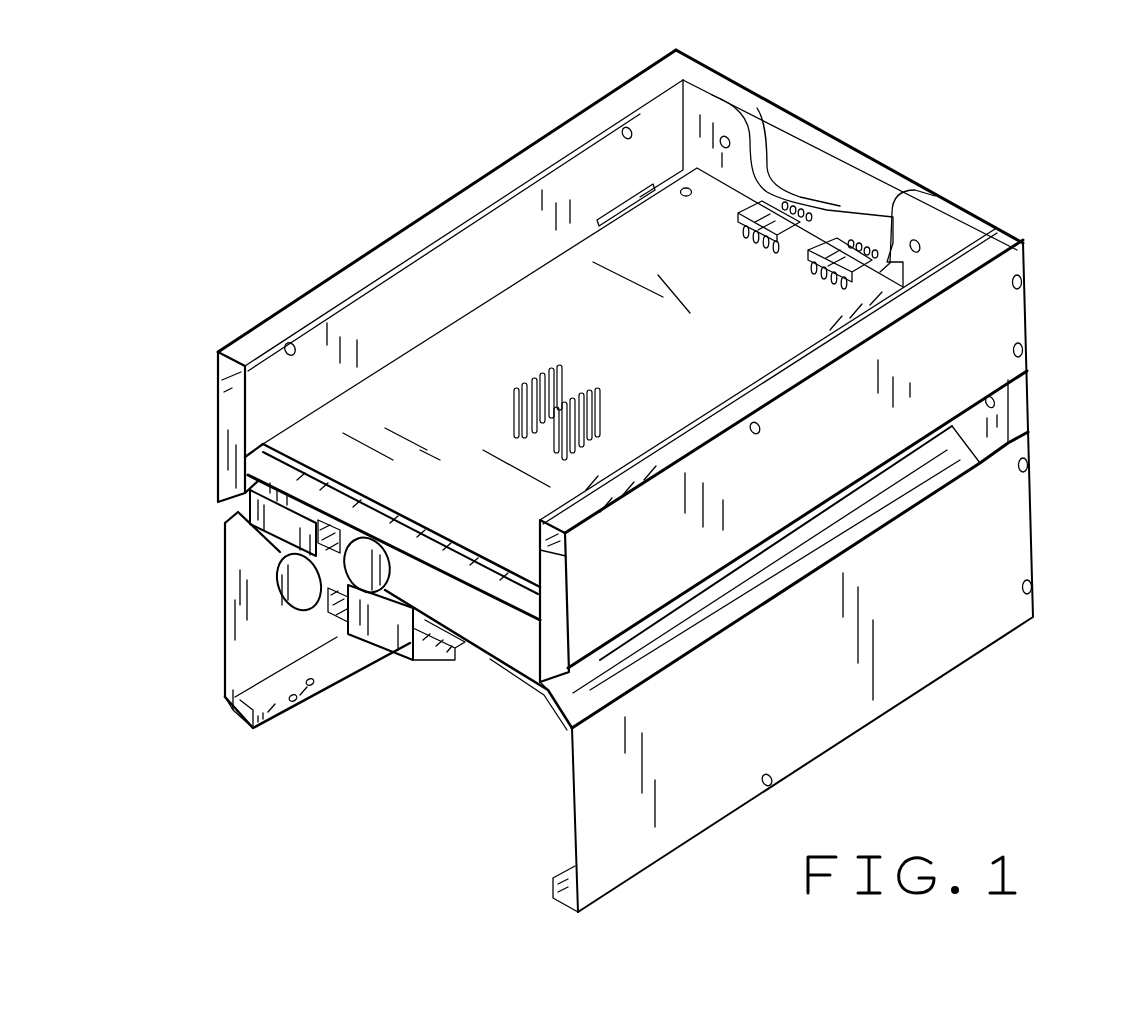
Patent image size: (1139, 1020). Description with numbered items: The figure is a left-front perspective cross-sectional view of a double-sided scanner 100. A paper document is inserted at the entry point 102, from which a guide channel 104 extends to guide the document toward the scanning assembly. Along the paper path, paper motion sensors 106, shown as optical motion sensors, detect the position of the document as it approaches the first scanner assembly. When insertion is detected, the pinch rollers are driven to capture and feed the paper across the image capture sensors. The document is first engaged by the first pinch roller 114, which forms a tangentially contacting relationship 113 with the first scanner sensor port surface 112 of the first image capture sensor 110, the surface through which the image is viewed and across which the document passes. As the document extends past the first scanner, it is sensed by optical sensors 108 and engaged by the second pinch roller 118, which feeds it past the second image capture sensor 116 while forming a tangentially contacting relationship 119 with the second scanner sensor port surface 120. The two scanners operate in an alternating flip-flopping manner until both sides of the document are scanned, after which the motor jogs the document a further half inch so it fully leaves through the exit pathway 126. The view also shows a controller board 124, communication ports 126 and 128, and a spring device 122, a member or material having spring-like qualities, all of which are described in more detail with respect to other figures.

The double-sided scanner 100 is at (322, 256).
The entry point 102 is at (668, 623).
The guide channel 104 is at (519, 797).
The paper motion sensors 106 is at (350, 637).
The optical sensors 108 is at (320, 605).
The first image capture sensor 110 is at (420, 563).
The first scanner sensor port surface 112 is at (400, 633).
The tangentially contacting relationship 113 is at (405, 587).
The first pinch roller 114 is at (353, 537).
The second image capture sensor 116 is at (224, 530).
The second pinch roller 118 is at (300, 583).
The tangentially contacting relationship 119 is at (232, 717).
The second scanner sensor port surface 120 is at (287, 550).
The spring device 122 is at (254, 486).
The controller board 124 is at (573, 300).
The communication port 126 is at (773, 220).
The communication port 128 is at (840, 253).